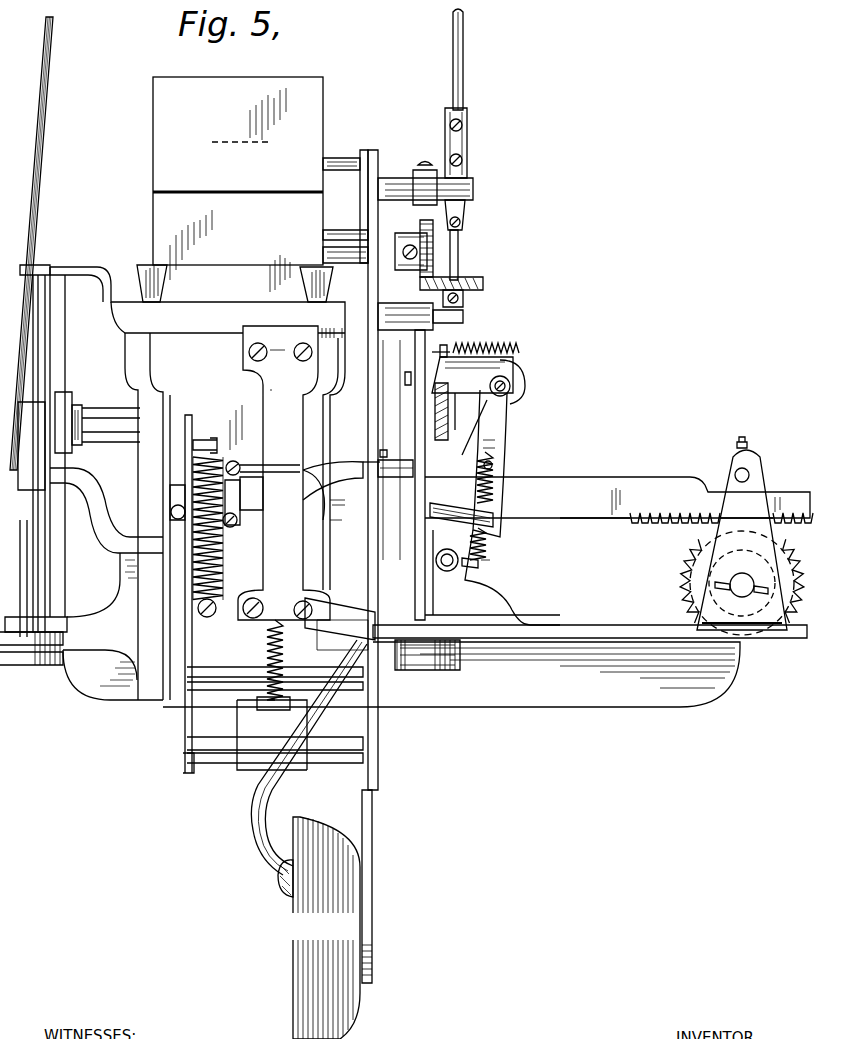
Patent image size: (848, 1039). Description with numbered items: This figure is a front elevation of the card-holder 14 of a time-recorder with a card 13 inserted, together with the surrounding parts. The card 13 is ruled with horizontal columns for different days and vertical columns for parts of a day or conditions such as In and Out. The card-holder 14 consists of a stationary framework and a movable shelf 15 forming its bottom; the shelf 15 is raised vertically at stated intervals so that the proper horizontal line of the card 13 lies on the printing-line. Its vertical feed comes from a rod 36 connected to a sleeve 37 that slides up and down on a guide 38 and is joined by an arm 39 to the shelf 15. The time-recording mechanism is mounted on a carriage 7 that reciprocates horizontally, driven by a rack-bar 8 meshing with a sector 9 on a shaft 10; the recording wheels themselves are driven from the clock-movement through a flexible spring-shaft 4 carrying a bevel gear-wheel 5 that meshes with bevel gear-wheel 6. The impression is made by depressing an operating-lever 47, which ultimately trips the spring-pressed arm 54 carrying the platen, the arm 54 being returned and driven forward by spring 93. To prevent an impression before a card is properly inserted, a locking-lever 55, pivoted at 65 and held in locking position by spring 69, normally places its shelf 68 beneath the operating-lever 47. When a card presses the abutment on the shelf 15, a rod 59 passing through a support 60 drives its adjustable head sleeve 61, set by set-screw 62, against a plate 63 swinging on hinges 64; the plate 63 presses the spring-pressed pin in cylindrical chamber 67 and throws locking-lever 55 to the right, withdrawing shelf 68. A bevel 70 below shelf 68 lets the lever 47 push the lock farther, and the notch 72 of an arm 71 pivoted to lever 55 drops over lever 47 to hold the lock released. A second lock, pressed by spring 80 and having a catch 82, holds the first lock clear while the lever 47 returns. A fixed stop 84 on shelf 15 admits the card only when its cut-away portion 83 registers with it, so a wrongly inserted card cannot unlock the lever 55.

The flexible spring-shaft 4 is at (403, 144).
The bevel gear-wheel 5 is at (480, 285).
The bevel gear-wheel 6 is at (425, 228).
The carriage 7 is at (370, 407).
The rack-bar 8 is at (619, 500).
The sector 9 is at (690, 553).
The shaft 10 is at (742, 533).
The card 13 is at (238, 184).
The card-holder 14 is at (197, 482).
The movable shelf 15 is at (243, 502).
The rod 36 is at (40, 173).
The sleeve 37 is at (43, 402).
The guide 38 is at (45, 325).
The arm 39 is at (102, 533).
The operating-lever 47 is at (455, 413).
The arm 54 is at (268, 398).
The locking-lever 55 is at (498, 458).
The rod 59 is at (253, 472).
The support 60 is at (333, 491).
The sleeve 61 is at (400, 478).
The set-screw 62 is at (388, 452).
The plate 63 is at (413, 550).
The hinges 64 is at (412, 616).
The pivot 65 is at (447, 571).
The cylindrical chamber 67 is at (493, 520).
The shelf 68 is at (488, 437).
The spring 69 is at (487, 545).
The bevel 70 is at (470, 447).
The arm 71 is at (512, 378).
The notch 72 is at (457, 373).
The spring 80 is at (503, 345).
The catch 82 is at (447, 350).
The cut-away portion 83 is at (167, 480).
The fixed stop 84 is at (167, 503).
The spring 93 is at (268, 648).